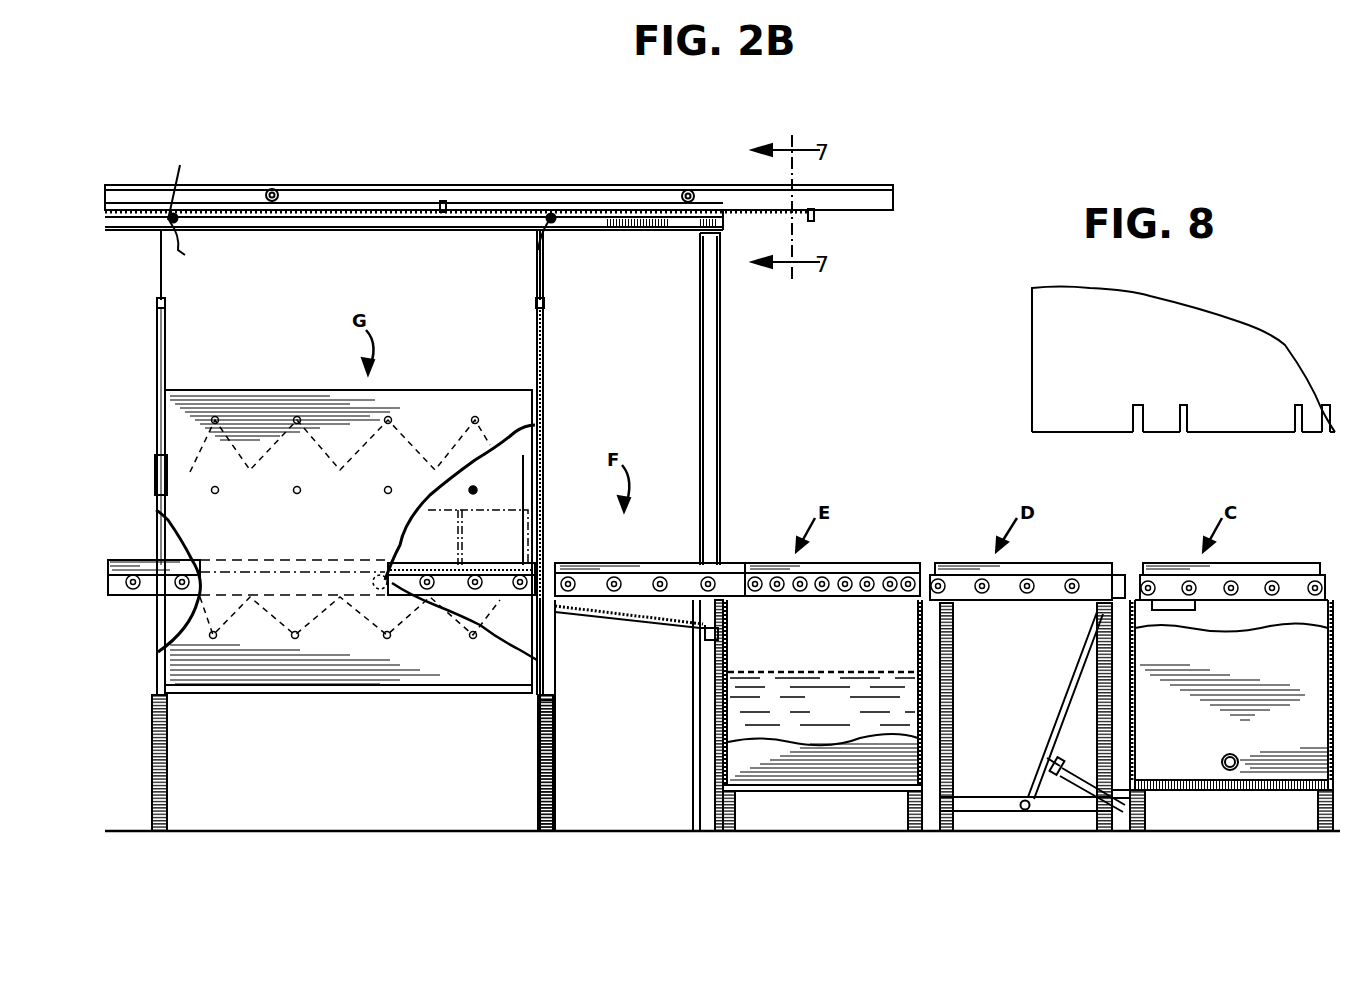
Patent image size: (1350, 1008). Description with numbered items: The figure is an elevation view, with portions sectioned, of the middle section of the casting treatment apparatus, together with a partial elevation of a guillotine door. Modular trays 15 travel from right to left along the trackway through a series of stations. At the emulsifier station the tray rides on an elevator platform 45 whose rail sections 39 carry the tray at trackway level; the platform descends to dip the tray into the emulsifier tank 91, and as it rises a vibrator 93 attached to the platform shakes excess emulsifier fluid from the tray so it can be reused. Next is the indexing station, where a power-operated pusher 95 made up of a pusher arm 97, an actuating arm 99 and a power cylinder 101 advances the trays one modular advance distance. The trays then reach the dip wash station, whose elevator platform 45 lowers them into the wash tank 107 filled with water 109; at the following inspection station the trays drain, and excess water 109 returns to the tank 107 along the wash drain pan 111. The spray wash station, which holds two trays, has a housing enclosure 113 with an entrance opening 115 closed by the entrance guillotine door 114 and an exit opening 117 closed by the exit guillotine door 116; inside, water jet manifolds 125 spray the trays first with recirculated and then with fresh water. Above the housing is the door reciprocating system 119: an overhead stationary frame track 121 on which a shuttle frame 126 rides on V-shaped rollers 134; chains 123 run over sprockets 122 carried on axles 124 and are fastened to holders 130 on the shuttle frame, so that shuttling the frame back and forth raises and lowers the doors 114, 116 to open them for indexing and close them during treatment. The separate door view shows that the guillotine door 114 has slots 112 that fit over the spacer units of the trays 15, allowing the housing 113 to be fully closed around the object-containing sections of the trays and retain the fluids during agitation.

In FIG. 2B, the modular tray 15 is at (140, 565).
In FIG. 2B, the rail section 39 is at (955, 590).
In FIG. 2B, the elevator platform 45 is at (796, 596).
In FIG. 2B, the emulsifier tank 91 is at (1330, 664).
In FIG. 2B, the vibrator 93 is at (1195, 606).
In FIG. 2B, the power-operated pusher 95 is at (1062, 676).
In FIG. 2B, the pusher arm 97 is at (1062, 710).
In FIG. 2B, the actuating arm 99 is at (1058, 762).
In FIG. 2B, the power cylinder 101 is at (1118, 790).
In FIG. 2B, the wash tank 107 is at (918, 640).
In FIG. 2B, the water 109 is at (842, 714).
In FIG. 2B, the wash drain pan 111 is at (590, 620).
In FIG. 8, the slots 112 is at (1178, 422).
In FIG. 2B, the housing enclosure 113 is at (525, 636).
In FIG. 2B, the entrance guillotine door 114 is at (544, 342).
In FIG. 8, the entrance guillotine door 114 is at (1032, 360).
In FIG. 2B, the entrance opening 115 is at (520, 498).
In FIG. 2B, the exit guillotine door 116 is at (167, 340).
In FIG. 2B, the exit opening 117 is at (150, 518).
In FIG. 2B, the door reciprocating system 119 is at (592, 172).
In FIG. 2B, the overhead stationary frame track 121 is at (503, 200).
In FIG. 2B, the sprocket 122 is at (537, 250).
In FIG. 2B, the chain 123 is at (165, 280).
In FIG. 2B, the axle 124 is at (575, 252).
In FIG. 2B, the water jet manifold 125 is at (270, 412).
In FIG. 2B, the shuttle frame 126 is at (885, 200).
In FIG. 2B, the holder 130 is at (446, 200).
In FIG. 2B, the V-shaped roller 134 is at (275, 190).